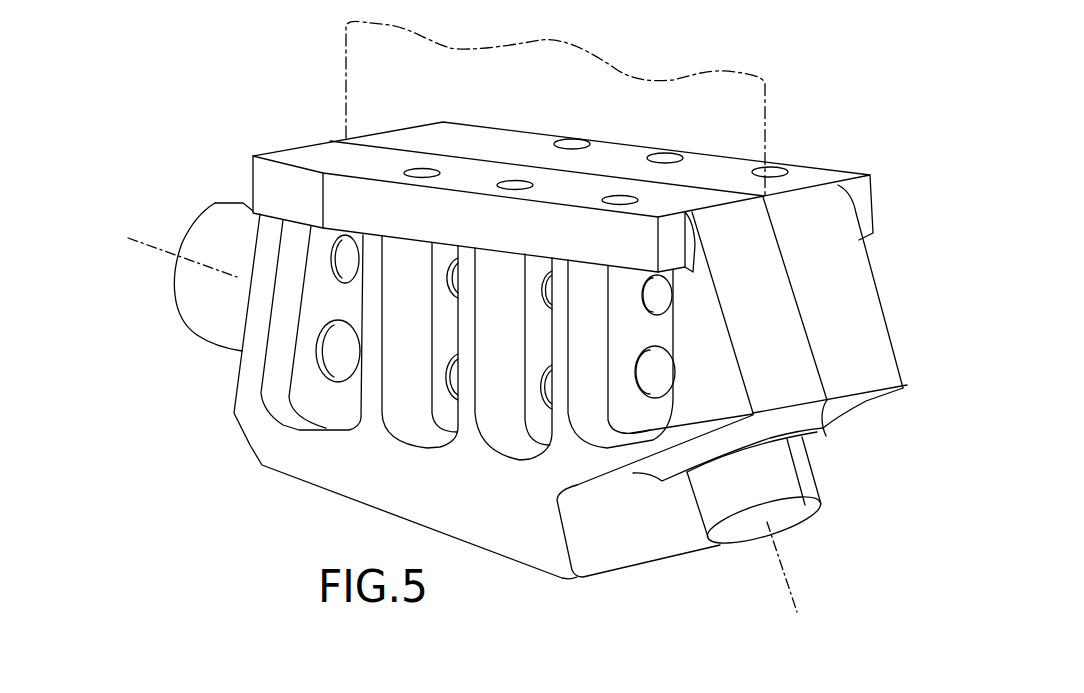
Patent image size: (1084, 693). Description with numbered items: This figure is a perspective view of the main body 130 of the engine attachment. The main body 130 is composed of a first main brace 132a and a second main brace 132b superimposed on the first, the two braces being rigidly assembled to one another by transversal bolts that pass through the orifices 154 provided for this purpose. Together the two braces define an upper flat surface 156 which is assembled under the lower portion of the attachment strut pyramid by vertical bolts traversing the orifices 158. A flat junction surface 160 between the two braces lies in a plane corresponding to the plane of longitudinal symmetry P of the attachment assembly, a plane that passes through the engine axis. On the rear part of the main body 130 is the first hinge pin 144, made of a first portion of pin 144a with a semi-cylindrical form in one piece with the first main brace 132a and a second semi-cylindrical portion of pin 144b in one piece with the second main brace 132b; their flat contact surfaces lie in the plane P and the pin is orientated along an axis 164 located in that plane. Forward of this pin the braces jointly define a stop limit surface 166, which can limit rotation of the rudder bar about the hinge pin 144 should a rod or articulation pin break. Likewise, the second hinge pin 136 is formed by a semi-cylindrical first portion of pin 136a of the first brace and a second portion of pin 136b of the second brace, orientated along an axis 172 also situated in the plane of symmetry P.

The main body 130 is at (300, 72).
The first main brace 132a is at (262, 183).
The second main brace 132b is at (821, 196).
The second hinge pin 136 is at (174, 266).
The first portion of pin 136a is at (197, 243).
The second portion of pin 136b is at (245, 202).
The first hinge pin 144 is at (800, 522).
The first portion of pin 144a is at (735, 510).
The second portion of pin 144b is at (800, 474).
The orifices 154 is at (345, 262).
The upper flat surface 156 is at (320, 155).
The orifices 158 is at (422, 172).
The flat junction surface 160 is at (790, 260).
The axis 164 is at (785, 580).
The stop limit surface 166 is at (584, 557).
The axis 172 is at (148, 248).
The plane of longitudinal symmetry P is at (767, 97).